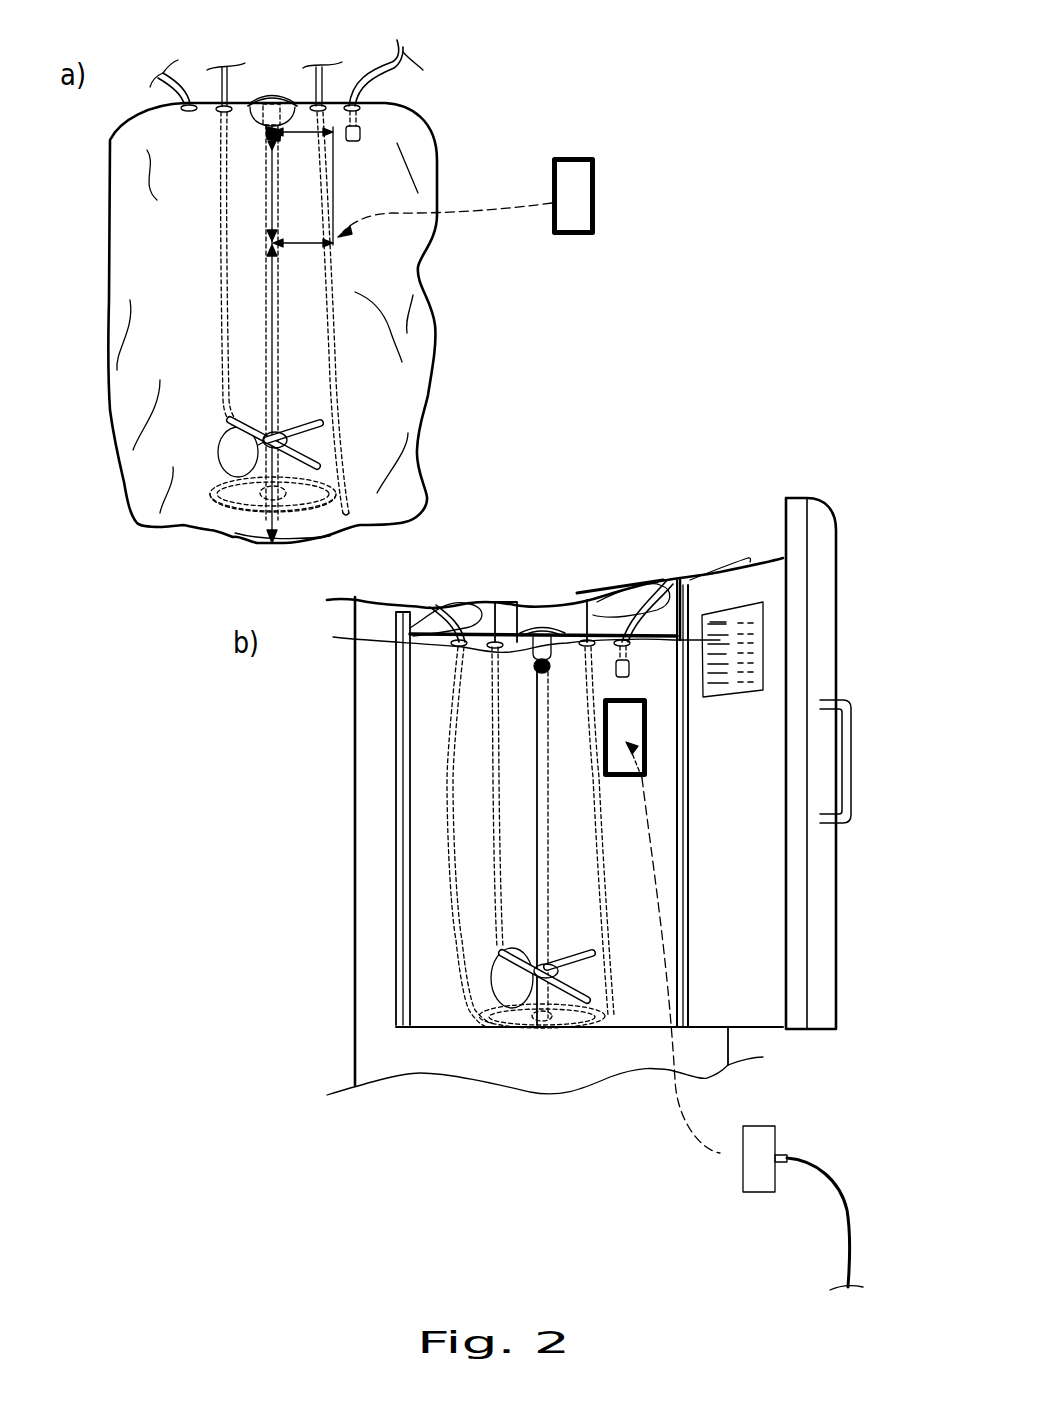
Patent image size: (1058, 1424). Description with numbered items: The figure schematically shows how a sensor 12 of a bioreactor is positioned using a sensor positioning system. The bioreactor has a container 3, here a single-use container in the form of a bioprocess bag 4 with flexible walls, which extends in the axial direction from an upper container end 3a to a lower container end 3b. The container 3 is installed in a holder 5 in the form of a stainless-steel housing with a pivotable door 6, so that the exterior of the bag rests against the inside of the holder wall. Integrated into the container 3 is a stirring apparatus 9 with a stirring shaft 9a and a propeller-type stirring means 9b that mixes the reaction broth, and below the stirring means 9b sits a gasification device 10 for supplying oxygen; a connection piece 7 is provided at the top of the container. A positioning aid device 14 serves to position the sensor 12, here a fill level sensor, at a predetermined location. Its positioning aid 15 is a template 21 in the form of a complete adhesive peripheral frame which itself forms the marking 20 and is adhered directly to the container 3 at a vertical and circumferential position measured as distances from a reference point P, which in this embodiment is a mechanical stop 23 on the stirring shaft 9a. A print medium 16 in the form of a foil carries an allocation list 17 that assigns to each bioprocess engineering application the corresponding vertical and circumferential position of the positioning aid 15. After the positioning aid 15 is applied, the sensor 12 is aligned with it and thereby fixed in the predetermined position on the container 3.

The container 3 is at (414, 463).
The bioprocess bag 4 is at (408, 385).
The upper container end 3a is at (145, 108).
The lower container end 3b is at (333, 537).
The holder 5 is at (373, 755).
The door 6 is at (822, 875).
The connection piece 7 is at (257, 93).
The stirring apparatus 9 is at (78, 398).
The stirring shaft 9a is at (303, 67).
The stirring means 9b is at (233, 460).
The gasification device 10 is at (243, 513).
The sensor 12 is at (768, 1142).
The positioning aid device 14 is at (647, 737).
The positioning aid 15 is at (558, 150).
The print medium 16 is at (738, 612).
The allocation list 17 is at (712, 615).
The marking 20 is at (597, 170).
The template 21 is at (445, 220).
The mechanical stop 23 is at (248, 141).
The reference point P is at (270, 93).